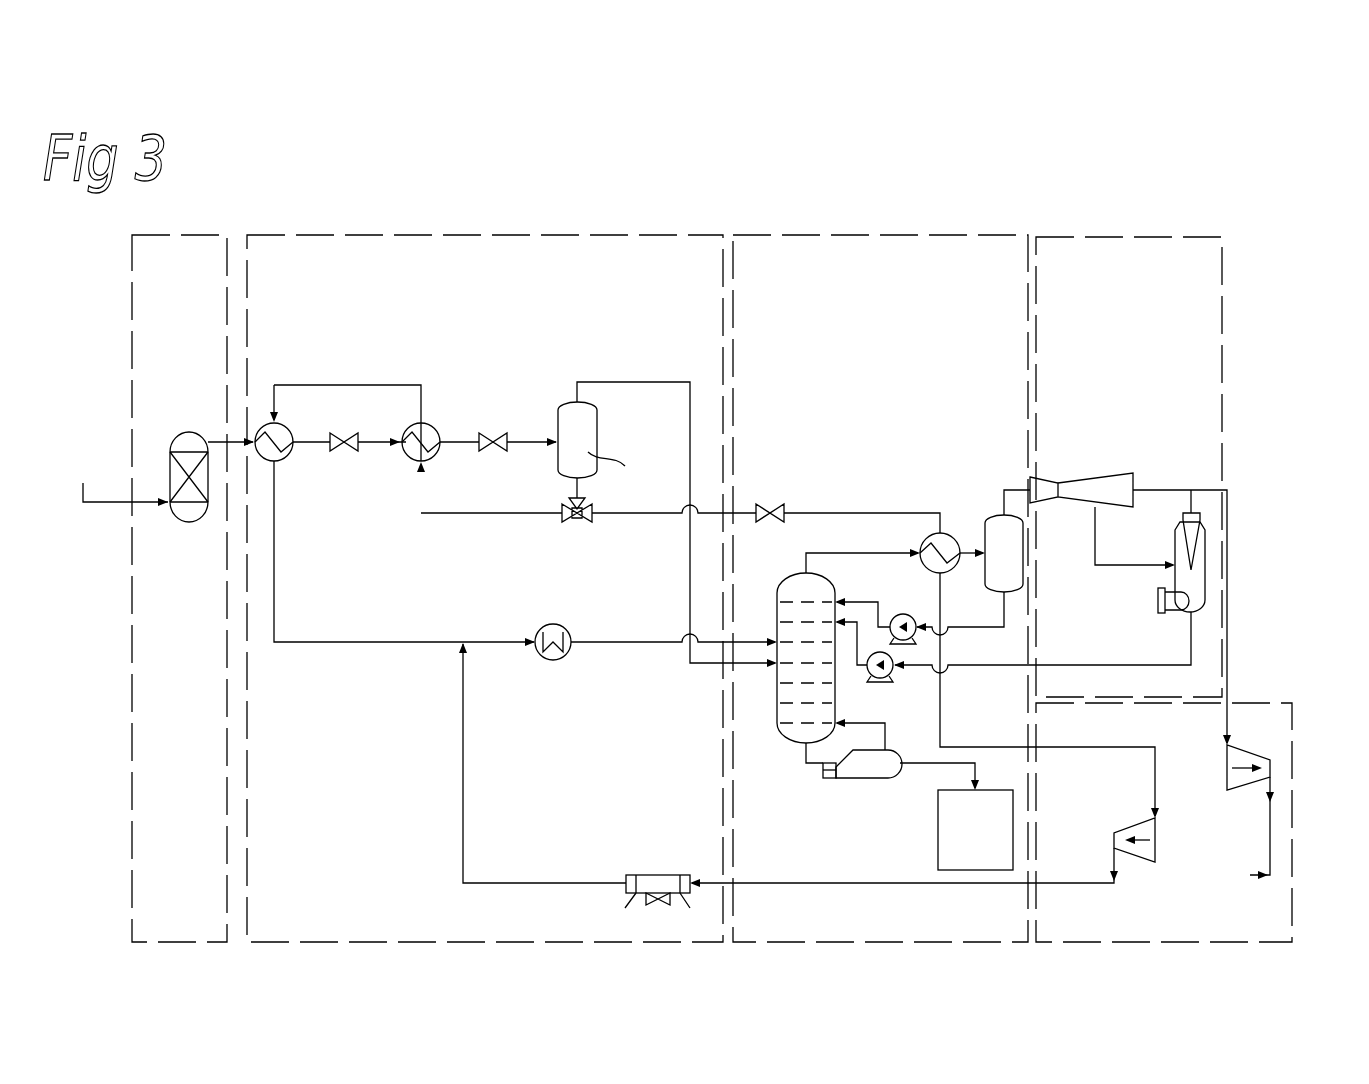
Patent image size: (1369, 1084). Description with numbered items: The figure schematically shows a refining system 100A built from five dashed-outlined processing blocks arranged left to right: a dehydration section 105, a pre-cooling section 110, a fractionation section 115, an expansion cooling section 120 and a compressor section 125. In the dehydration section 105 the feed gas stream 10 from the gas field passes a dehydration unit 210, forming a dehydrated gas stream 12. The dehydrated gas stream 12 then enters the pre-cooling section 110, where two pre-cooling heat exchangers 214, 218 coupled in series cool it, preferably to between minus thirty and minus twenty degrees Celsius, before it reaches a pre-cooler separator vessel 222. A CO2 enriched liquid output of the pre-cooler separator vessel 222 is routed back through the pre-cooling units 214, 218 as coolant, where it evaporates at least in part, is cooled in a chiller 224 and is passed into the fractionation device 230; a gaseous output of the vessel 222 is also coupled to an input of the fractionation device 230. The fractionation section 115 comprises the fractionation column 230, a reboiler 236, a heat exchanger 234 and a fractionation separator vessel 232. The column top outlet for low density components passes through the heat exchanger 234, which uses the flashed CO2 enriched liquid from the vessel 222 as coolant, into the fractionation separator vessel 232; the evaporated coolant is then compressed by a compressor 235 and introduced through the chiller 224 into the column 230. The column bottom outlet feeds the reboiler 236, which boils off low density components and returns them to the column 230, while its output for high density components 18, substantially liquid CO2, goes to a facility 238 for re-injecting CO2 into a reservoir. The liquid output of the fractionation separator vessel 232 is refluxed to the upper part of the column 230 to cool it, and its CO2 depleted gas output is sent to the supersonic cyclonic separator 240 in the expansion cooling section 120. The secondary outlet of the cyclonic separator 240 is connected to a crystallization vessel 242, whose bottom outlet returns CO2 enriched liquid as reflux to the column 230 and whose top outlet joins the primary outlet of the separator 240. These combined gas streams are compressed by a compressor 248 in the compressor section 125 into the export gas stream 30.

The feed gas stream 10 is at (100, 502).
The dehydrated gas stream 12 is at (218, 437).
The output for high density components 18 is at (925, 765).
The export gas stream 30 is at (1270, 845).
The refining system 100A is at (764, 197).
The first processing block 105 is at (187, 235).
The second processing block 110 is at (487, 235).
The third processing block 115 is at (865, 235).
The fourth processing block 120 is at (1100, 237).
The fifth processing block 125 is at (1255, 703).
The dehydration unit 210 is at (190, 510).
The pre-cooling unit 214 is at (287, 412).
The pre-cooling unit 218 is at (432, 427).
The pre-cooler separator vessel 222 is at (568, 423).
The chiller 224 is at (562, 627).
The fractionation device 230 is at (795, 588).
The fractionation separator vessel 232 is at (997, 527).
The heat exchanger 234 is at (927, 542).
The compressor 235 is at (1153, 848).
The reboiler 236 is at (870, 768).
The facility 238 is at (970, 853).
The supersonic cyclonic separator 240 is at (1090, 483).
The crystallization vessel 242 is at (1193, 555).
The compressor 248 is at (1250, 760).